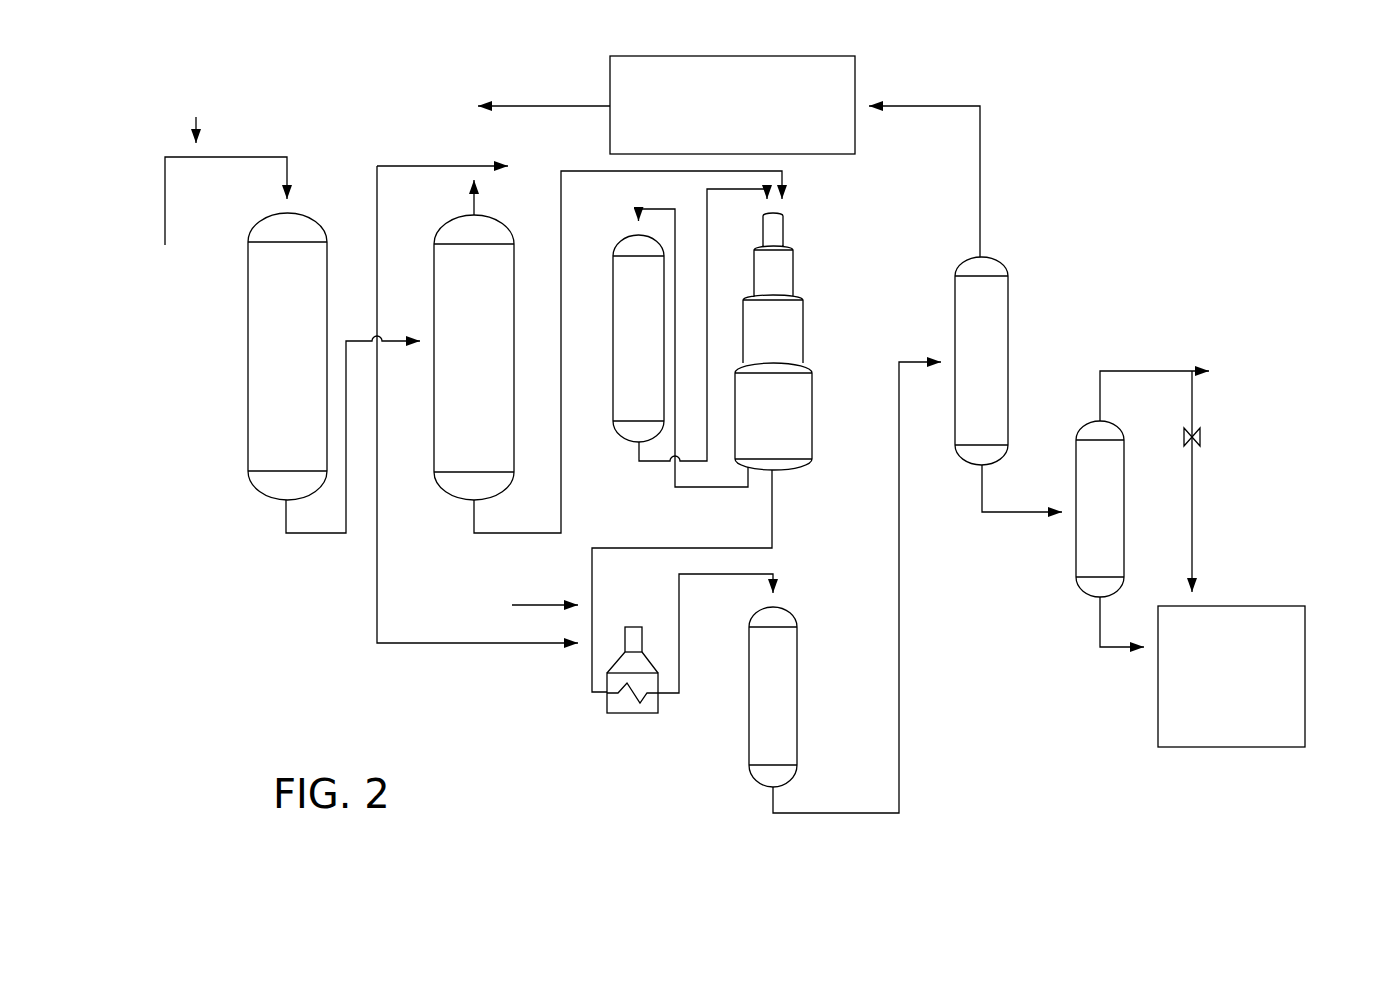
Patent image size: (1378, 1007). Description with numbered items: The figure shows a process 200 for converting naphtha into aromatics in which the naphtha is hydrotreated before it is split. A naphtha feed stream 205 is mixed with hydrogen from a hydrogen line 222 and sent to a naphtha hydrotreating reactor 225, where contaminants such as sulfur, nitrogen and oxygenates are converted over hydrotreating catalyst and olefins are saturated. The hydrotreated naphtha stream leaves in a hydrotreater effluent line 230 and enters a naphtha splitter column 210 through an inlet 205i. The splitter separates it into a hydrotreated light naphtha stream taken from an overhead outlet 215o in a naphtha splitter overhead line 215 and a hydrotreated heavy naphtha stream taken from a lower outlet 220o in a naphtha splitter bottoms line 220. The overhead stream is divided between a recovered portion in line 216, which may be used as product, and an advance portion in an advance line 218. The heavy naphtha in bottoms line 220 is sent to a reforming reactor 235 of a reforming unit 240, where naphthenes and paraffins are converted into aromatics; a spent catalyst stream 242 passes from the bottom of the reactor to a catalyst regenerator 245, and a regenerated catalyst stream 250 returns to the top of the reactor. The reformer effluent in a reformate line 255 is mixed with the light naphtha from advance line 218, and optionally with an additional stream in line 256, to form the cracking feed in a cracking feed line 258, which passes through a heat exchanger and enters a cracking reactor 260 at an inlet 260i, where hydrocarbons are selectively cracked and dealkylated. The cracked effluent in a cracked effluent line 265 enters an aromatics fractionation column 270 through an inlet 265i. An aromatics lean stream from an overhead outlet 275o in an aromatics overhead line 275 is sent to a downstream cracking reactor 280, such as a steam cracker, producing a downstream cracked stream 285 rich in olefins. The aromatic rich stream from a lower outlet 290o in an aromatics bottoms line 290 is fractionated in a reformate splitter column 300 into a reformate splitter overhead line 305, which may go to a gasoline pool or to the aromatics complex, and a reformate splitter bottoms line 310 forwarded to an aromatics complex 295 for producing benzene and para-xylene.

The process 200 is at (178, 92).
The naphtha feed stream 205 is at (165, 181).
The inlet 205i is at (433, 338).
The naphtha splitter column 210 is at (514, 262).
The naphtha splitter overhead line 215 is at (474, 192).
The overhead outlet 215o is at (480, 214).
The recovered portion stream line 216 is at (492, 164).
The advance line 218 is at (397, 165).
The naphtha splitter bottoms line 220 is at (473, 529).
The lower outlet 220o is at (474, 504).
The hydrogen line 222 is at (199, 121).
The naphtha hydrotreating reactor 225 is at (248, 280).
The hydrotreater effluent line 230 is at (340, 533).
The reforming reactor 235 is at (790, 247).
The reforming unit 240 is at (830, 351).
The spent catalyst stream 242 is at (714, 488).
The catalyst regenerator 245 is at (634, 230).
The regenerated catalyst stream 250 is at (648, 463).
The reformate line 255 is at (778, 490).
The additional stream line 256 is at (563, 604).
The cracking feed line 258 is at (600, 669).
The cracking reactor 260 is at (783, 608).
The inlet 260i is at (762, 600).
The cracked effluent line 265 is at (843, 813).
The inlet 265i is at (953, 358).
The aromatics fractionation column 270 is at (960, 265).
The aromatics overhead line 275 is at (965, 106).
The overhead outlet 275o is at (983, 257).
The downstream cracking reactor 280 is at (838, 56).
The downstream cracked stream 285 is at (562, 106).
The aromatics bottoms line 290 is at (1020, 512).
The lower outlet 290o is at (984, 464).
The aromatics complex 295 is at (1268, 606).
The reformate splitter column 300 is at (1110, 425).
The reformate splitter overhead line 305 is at (1122, 371).
The reformate splitter bottoms line 310 is at (1095, 618).